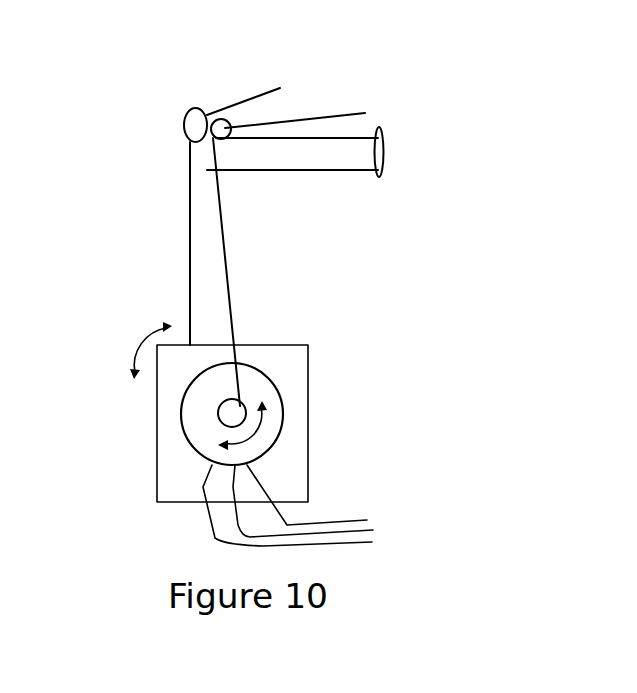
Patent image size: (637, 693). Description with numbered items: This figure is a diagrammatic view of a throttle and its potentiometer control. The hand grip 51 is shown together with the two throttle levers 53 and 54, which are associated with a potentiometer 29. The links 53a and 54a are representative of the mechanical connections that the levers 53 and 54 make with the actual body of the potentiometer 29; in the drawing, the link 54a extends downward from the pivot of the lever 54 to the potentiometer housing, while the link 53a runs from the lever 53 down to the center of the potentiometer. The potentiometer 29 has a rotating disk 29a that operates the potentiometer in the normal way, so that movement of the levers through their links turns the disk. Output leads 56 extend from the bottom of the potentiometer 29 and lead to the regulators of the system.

The potentiometer 29 is at (305, 430).
The rotating disk 29a is at (202, 383).
The hand grip 51 is at (304, 175).
The throttle lever 53 is at (313, 118).
The link 53a is at (222, 207).
The throttle lever 54 is at (258, 92).
The link 54a is at (188, 255).
The output leads 56 is at (357, 518).